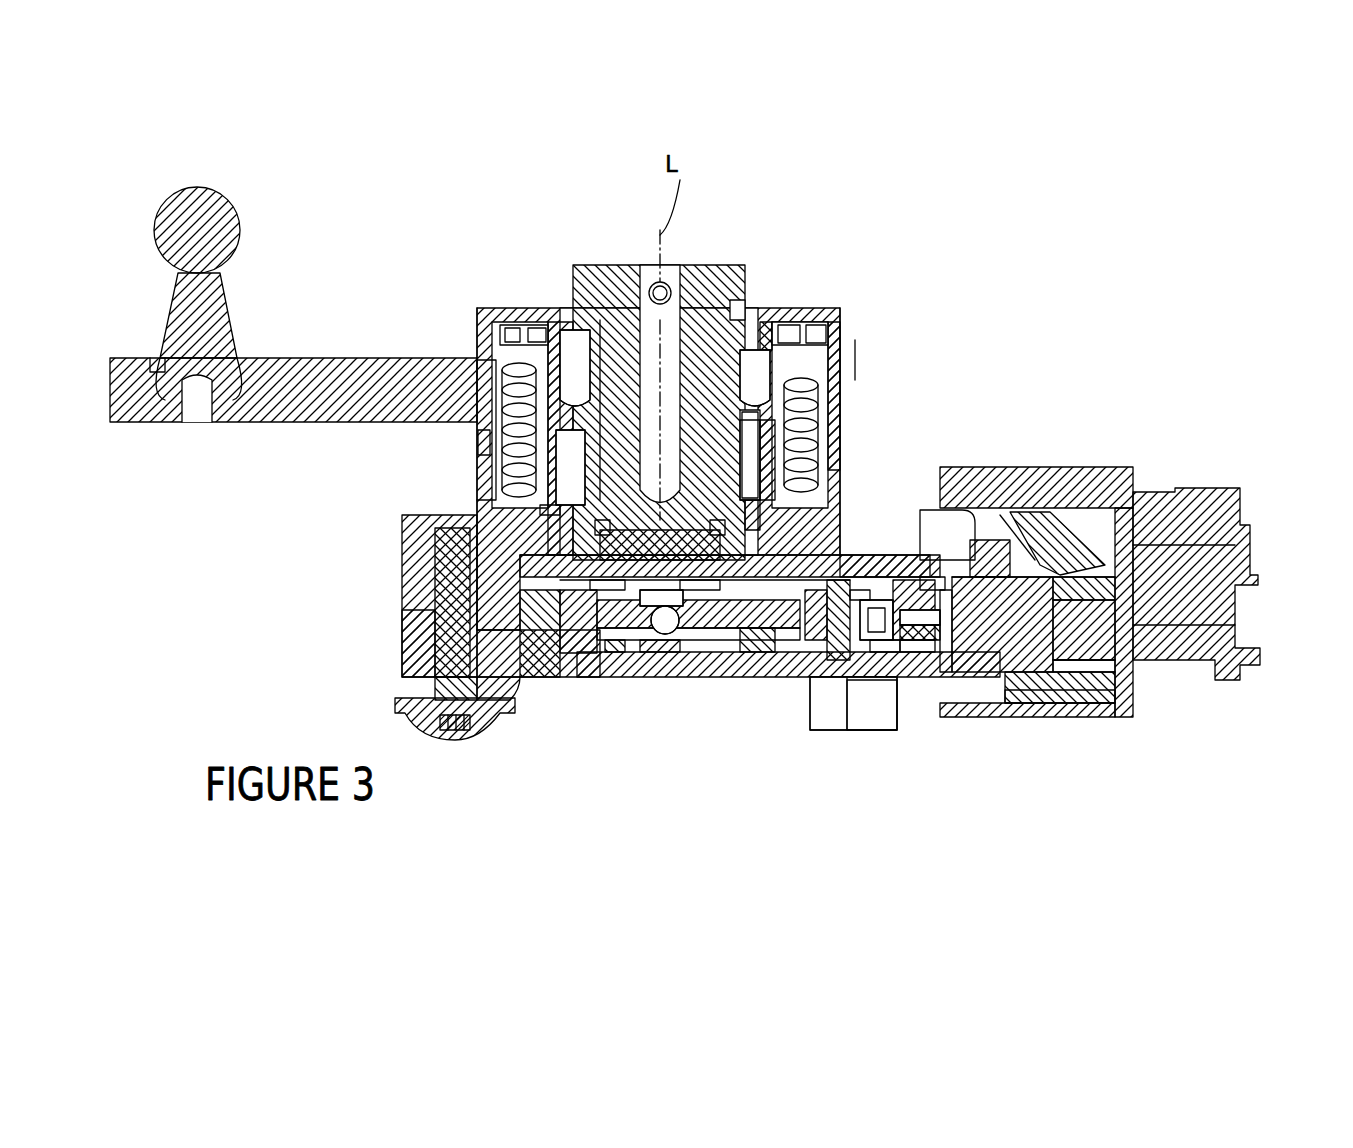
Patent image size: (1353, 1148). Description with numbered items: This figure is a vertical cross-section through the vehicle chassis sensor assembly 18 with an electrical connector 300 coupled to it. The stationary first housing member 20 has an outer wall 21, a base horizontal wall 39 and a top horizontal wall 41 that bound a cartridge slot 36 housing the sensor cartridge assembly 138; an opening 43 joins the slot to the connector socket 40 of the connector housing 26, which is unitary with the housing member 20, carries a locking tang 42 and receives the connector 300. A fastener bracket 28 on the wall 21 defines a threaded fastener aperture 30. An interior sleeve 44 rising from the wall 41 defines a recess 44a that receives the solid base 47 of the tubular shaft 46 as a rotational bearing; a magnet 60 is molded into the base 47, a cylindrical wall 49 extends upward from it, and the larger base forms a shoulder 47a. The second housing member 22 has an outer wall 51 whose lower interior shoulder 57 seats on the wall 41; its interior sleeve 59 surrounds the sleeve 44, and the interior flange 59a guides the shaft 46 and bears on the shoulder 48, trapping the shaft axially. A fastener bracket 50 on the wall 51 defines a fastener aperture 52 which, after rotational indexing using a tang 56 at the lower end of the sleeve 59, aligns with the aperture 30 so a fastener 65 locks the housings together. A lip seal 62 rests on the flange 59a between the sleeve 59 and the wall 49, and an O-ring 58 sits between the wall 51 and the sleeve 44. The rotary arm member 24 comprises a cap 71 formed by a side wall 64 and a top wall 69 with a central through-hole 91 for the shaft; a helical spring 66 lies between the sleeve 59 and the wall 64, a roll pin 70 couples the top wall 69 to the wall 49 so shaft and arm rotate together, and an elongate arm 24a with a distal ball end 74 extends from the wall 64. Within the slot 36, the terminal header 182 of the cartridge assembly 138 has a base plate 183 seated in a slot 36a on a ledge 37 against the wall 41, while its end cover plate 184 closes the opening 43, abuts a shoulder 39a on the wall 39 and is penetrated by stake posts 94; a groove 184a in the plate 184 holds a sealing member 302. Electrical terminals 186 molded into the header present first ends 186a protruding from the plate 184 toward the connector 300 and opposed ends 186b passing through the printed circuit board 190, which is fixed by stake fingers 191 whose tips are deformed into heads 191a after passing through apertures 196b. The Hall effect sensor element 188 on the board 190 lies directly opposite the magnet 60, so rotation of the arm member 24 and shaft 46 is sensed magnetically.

The sensor assembly 18 is at (835, 235).
The first housing member 20 is at (788, 731).
The outer wall 21 is at (833, 560).
The second housing member 22 is at (336, 628).
The rotary arm member 24 is at (293, 249).
The elongate arm 24a is at (330, 358).
The electrical terminal connector housing 26 is at (1048, 512).
The fastener bracket 28 is at (440, 652).
The fastener aperture 30 is at (388, 720).
The cartridge slot 36 is at (674, 696).
The slot 36a is at (590, 680).
The ledge 37 is at (597, 665).
The base horizontal wall 39 is at (665, 736).
The shoulder 39a is at (900, 640).
The connector socket 40 is at (900, 630).
The top horizontal wall 41 is at (762, 680).
The tang 42 is at (1068, 630).
The opening 43 is at (895, 655).
The interior sleeve 44 is at (793, 482).
The recess 44a is at (828, 430).
The shaft 46 is at (608, 324).
The base 47 is at (434, 438).
The shoulder 47a is at (478, 445).
The shoulder 48 is at (545, 505).
The cylindrical wall 49 is at (780, 312).
The fastener bracket 50 is at (420, 620).
The outer wall 51 is at (735, 310).
The fastener aperture 52 is at (440, 585).
The tang 56 is at (752, 535).
The lower interior shoulder 57 is at (550, 690).
The O-ring 58 is at (773, 510).
The interior sleeve 59 is at (803, 455).
The interior flange 59a is at (822, 398).
The magnet 60 is at (603, 683).
The lip seal 62 is at (852, 350).
The side wall 64 is at (845, 460).
The fastener 65 is at (440, 722).
The helical spring 66 is at (478, 398).
The top wall 69 is at (548, 330).
The roll pin 70 is at (654, 300).
The cap 71 is at (790, 340).
The ball end 74 is at (205, 205).
The through-hole 91 is at (622, 335).
The stake posts 94 is at (1010, 660).
The sensor cartridge assembly 138 is at (1000, 640).
The terminal header 182 is at (1010, 505).
The base plate 183 is at (600, 660).
The end cover plate 184 is at (1068, 722).
The circumferential groove 184a is at (950, 700).
The electrical terminals 186 is at (1064, 742).
The first ends 186a is at (1000, 630).
The opposed ends 186b is at (880, 650).
The Hall effect sensor element 188 is at (687, 683).
The printed circuit board 190 is at (692, 683).
The stake fingers 191 is at (822, 680).
The heads 191a is at (855, 680).
The through apertures 196b is at (860, 650).
The electrical connector 300 is at (1233, 488).
The sealing member 302 is at (930, 670).